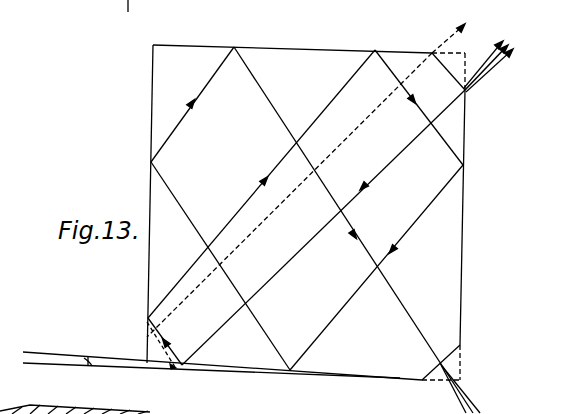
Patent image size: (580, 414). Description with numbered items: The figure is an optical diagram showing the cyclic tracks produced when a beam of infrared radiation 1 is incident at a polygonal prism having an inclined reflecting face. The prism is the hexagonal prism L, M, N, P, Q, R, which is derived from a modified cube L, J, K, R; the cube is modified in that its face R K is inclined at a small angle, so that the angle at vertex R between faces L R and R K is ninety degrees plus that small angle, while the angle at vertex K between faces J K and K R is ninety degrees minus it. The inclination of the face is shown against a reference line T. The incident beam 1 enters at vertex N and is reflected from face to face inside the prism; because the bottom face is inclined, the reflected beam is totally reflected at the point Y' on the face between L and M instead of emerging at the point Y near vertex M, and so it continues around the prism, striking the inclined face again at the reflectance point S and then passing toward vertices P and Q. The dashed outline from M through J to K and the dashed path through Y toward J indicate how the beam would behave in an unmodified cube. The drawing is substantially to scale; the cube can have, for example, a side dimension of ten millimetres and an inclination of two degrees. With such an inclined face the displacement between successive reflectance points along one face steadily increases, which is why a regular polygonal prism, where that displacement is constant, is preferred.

The prism vertex L is at (289, 192).
The prism vertex M is at (441, 59).
The cube vertex J is at (451, 38).
The prism vertex N is at (471, 216).
The incident beam 1 is at (488, 66).
The emergence point Y is at (290, 195).
The total reflection point Y' is at (305, 171).
The reflectance point S is at (303, 366).
The prism vertex Q is at (251, 230).
The prism vertex P is at (449, 354).
The cube vertex K is at (450, 368).
The vertex R is at (146, 358).
The reference line T is at (211, 374).